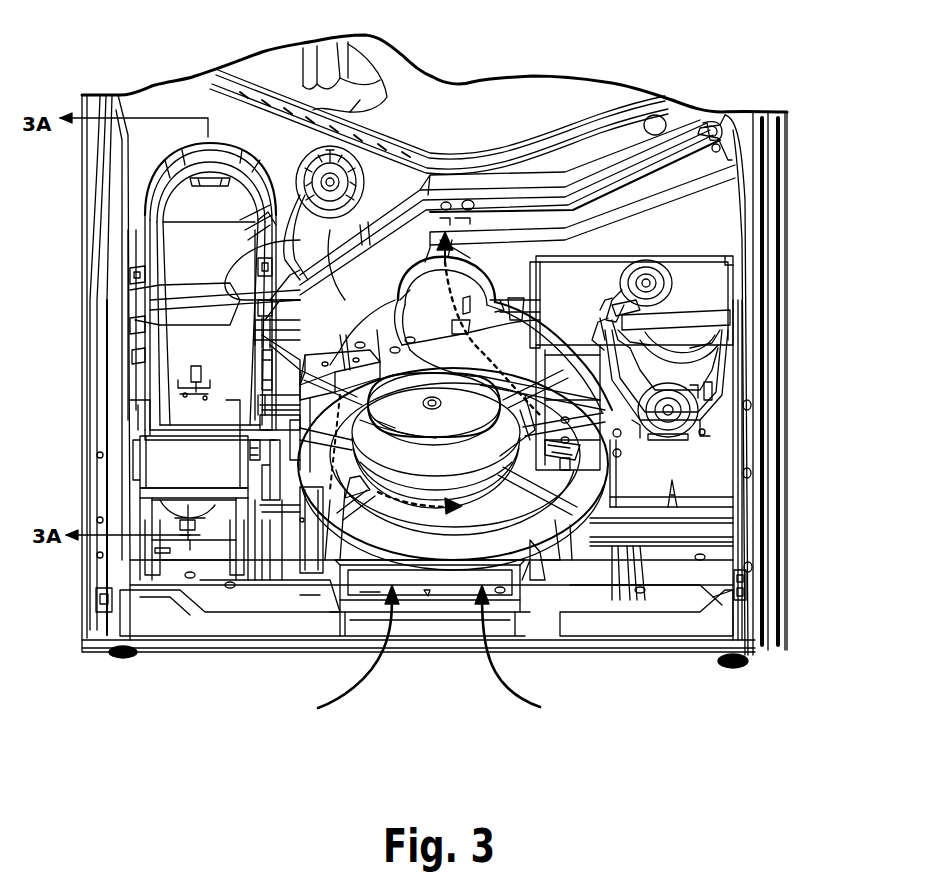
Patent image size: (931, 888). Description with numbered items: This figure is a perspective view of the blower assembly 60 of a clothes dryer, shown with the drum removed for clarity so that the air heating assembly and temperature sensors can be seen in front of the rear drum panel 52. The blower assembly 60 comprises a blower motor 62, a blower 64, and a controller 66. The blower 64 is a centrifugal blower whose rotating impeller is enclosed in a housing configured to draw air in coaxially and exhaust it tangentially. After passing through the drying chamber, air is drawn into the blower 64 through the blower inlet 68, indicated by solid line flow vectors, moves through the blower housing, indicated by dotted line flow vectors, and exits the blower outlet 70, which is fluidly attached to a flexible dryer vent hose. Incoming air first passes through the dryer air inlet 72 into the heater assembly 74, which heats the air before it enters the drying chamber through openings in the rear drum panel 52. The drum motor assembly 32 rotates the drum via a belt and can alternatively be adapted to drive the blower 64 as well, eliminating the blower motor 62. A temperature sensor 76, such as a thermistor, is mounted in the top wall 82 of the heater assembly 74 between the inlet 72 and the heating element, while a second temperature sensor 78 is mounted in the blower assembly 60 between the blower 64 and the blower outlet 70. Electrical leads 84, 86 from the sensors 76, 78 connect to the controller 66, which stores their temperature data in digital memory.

The drum motor assembly 32 is at (727, 348).
The rear drum panel 52 is at (706, 185).
The blower assembly 60 is at (497, 312).
The blower motor 62 is at (330, 450).
The blower 64 is at (605, 418).
The controller 66 is at (594, 265).
The blower inlet 68 is at (427, 595).
The blower outlet 70 is at (418, 300).
The dryer air inlet 72 is at (418, 404).
The heater assembly 74 is at (165, 340).
The temperature sensor 76 is at (192, 375).
The second temperature sensor 78 is at (460, 320).
The top wall 82 is at (200, 292).
The electrical lead 84 is at (160, 433).
The electrical lead 86 is at (516, 310).